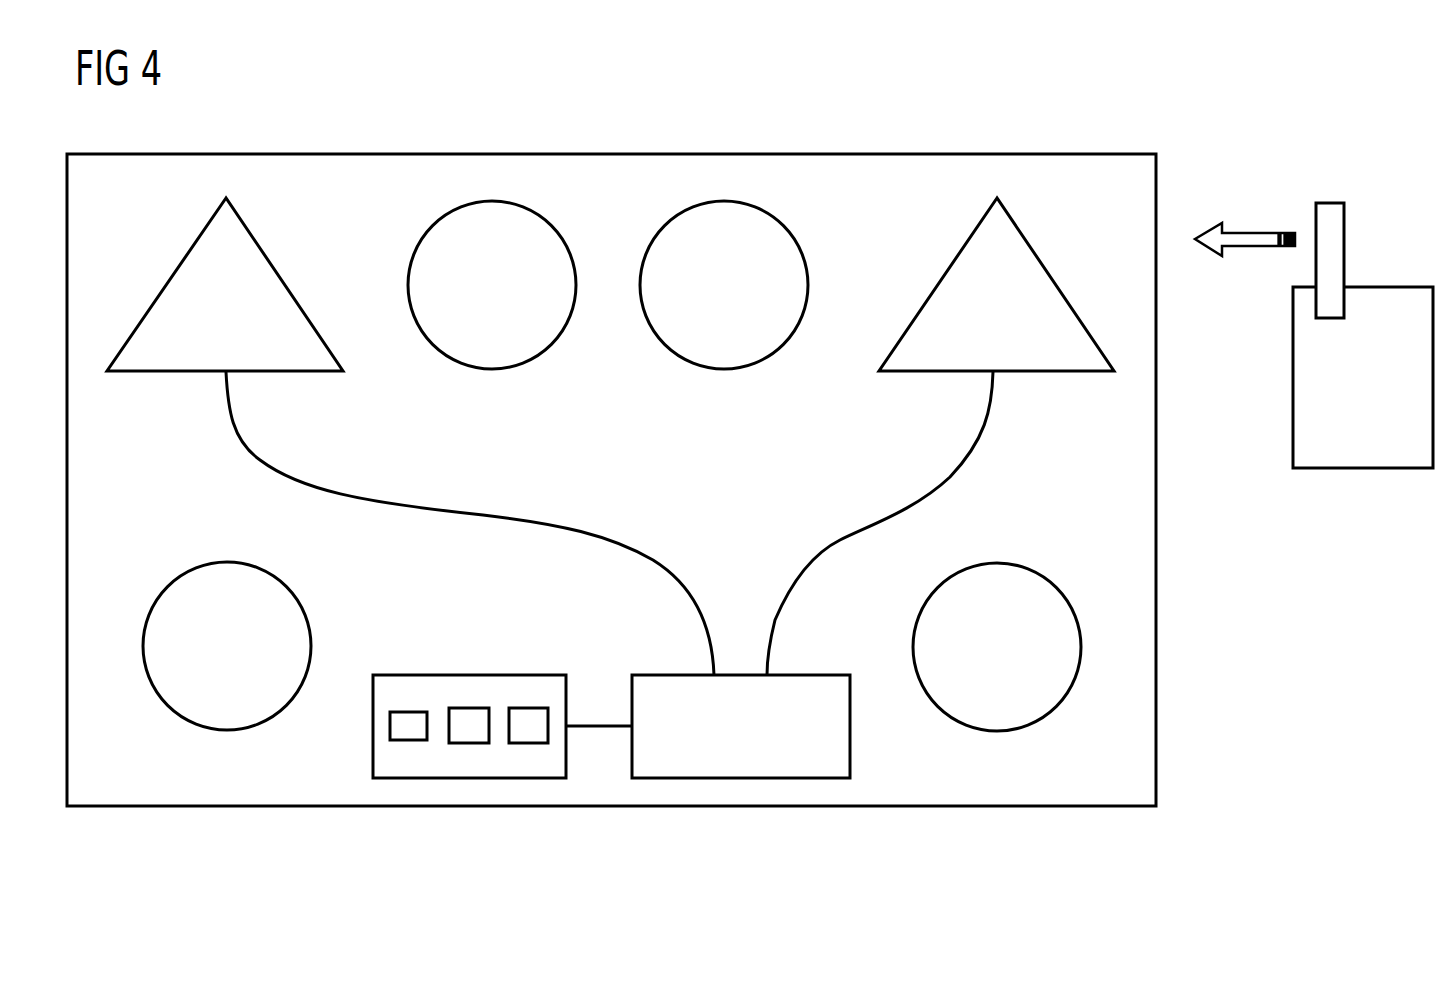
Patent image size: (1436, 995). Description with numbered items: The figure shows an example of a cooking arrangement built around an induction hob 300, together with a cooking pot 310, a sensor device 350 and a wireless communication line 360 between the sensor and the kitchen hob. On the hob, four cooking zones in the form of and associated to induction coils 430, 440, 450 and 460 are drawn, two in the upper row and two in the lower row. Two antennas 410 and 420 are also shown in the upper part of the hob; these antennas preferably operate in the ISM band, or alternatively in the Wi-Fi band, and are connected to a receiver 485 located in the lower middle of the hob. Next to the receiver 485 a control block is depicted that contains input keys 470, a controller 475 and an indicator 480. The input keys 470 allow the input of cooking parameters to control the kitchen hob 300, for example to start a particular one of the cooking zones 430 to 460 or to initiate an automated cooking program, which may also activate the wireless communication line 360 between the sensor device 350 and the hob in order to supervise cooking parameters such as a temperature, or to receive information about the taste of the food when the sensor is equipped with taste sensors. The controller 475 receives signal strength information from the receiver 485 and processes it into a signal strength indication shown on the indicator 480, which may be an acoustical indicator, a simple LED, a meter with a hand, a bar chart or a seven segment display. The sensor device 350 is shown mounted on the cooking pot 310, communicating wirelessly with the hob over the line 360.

The induction hob 300 is at (1157, 652).
The cooking pot 310 is at (1366, 470).
The sensor device 350 is at (1331, 240).
The wireless communication line 360 is at (1253, 234).
The antenna 410 is at (248, 323).
The antenna 420 is at (1019, 323).
The induction cooking zone 430 is at (515, 303).
The induction cooking zone 440 is at (747, 303).
The induction cooking zone 450 is at (250, 663).
The induction cooking zone 460 is at (1019, 663).
The input key 470 is at (530, 744).
The controller 475 is at (410, 741).
The indicator 480 is at (470, 744).
The receiver 485 is at (754, 744).